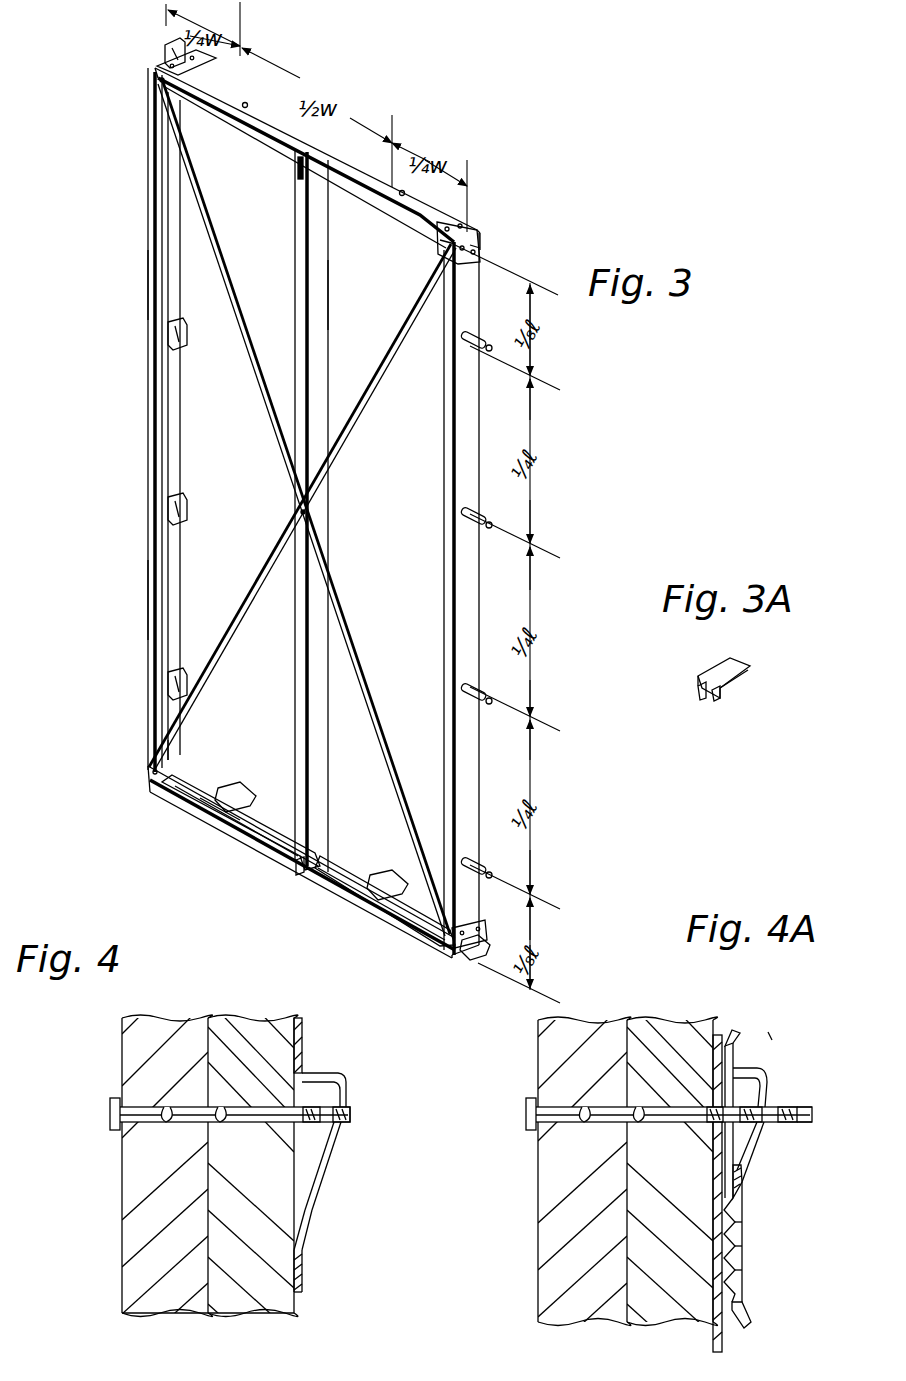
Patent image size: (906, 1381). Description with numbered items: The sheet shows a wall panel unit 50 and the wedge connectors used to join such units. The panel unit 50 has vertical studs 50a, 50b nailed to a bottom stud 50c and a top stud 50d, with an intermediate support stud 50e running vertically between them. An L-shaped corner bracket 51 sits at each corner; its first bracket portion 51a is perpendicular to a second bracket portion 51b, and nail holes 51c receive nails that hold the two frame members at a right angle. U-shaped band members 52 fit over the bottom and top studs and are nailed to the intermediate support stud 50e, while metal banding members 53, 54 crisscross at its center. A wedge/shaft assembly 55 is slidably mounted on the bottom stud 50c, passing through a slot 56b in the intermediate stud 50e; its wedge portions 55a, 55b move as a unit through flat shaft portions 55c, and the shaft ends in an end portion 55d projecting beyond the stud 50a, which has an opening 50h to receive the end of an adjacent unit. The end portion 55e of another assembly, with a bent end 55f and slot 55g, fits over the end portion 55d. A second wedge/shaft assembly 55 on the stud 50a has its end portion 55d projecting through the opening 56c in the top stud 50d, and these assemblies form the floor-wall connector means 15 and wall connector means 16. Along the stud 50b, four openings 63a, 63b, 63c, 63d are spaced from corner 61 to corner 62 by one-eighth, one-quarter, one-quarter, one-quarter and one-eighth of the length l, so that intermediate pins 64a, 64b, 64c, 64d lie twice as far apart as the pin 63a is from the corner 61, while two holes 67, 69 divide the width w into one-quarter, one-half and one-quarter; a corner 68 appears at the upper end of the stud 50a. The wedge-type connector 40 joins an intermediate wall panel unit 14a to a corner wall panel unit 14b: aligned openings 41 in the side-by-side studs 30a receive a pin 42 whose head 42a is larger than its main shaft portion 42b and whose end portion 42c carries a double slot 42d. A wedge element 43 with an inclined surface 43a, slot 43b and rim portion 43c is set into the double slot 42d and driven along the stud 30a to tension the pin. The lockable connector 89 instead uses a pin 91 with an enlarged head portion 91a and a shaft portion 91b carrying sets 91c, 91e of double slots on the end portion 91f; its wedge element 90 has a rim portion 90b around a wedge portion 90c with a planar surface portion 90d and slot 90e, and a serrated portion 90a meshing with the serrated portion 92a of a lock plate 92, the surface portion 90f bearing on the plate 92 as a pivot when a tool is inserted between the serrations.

In FIG. 4, the intermediate wall panel unit 14a is at (120, 1283).
In FIG. 4, the corner wall panel unit 14b is at (296, 1306).
In FIG. 3, the floor-wall connector means 15 is at (222, 826).
In FIG. 3, the wall connector means 16 is at (145, 284).
In FIG. 4, the stud member 30a is at (165, 1318).
In FIG. 4A, the stud member 30a is at (588, 1322).
In FIG. 4, the wedge-type connector 40 is at (305, 1035).
In FIG. 4, the aligned openings 41 is at (167, 1106).
In FIG. 4A, the aligned openings 41 is at (586, 1106).
In FIG. 4, the pin 42 is at (130, 1102).
In FIG. 4, the head 42a is at (110, 1112).
In FIG. 4, the main shaft portion 42b is at (222, 1106).
In FIG. 4, the pin end portion 42c is at (345, 1107).
In FIG. 4, the double slot 42d is at (322, 1107).
In FIG. 4, the wedge element 43 is at (302, 1238).
In FIG. 4, the inclined surface 43a is at (310, 1192).
In FIG. 4, the slot 43b is at (326, 1142).
In FIG. 4, the rim portion 43c is at (303, 1262).
In FIG. 3, the panel unit 50 is at (146, 450).
In FIG. 3, the vertical stud 50a is at (148, 602).
In FIG. 3, the vertical stud 50b is at (446, 550).
In FIG. 3, the bottom stud 50c is at (160, 785).
In FIG. 3, the top stud 50d is at (262, 150).
In FIG. 3, the intermediate support stud 50e is at (326, 290).
In FIG. 3, the opening 50h is at (182, 762).
In FIG. 3, the L-shaped corner bracket 51 is at (478, 230).
In FIG. 3, the first bracket portion 51a is at (447, 240).
In FIG. 3, the second bracket portion 51b is at (483, 250).
In FIG. 3, the nail holes 51c is at (476, 226).
In FIG. 3, the U-shaped band member 52 is at (345, 148).
In FIG. 3, the metal banding member 53 is at (270, 452).
In FIG. 3, the metal banding member 54 is at (378, 368).
In FIG. 3, the wedge/shaft assembly 55 is at (181, 428).
In FIG. 3, the wedge portion 55a is at (238, 788).
In FIG. 3, the wedge portion 55b is at (392, 878).
In FIG. 3, the flat shaft portion 55c is at (326, 856).
In FIG. 3, the end portion 55d is at (470, 958).
In FIG. 3A, the end portion 55e is at (742, 662).
In FIG. 3A, the bent end 55f is at (696, 688).
In FIG. 3A, the slot 55g is at (708, 694).
In FIG. 3, the slot 56b is at (312, 842).
In FIG. 3, the opening 56c is at (474, 922).
In FIG. 3, the corner 61 is at (481, 238).
In FIG. 3, the corner 62 is at (446, 960).
In FIG. 3, the opening 63a is at (463, 334).
In FIG. 3, the opening 63b is at (465, 510).
In FIG. 3, the opening 63c is at (465, 686).
In FIG. 3, the opening 63d is at (488, 865).
In FIG. 3, the intermediate pin 64a is at (488, 350).
In FIG. 3, the intermediate pin 64b is at (486, 524).
In FIG. 3, the pin head 64c is at (486, 700).
In FIG. 3, the pin head 64d is at (490, 877).
In FIG. 3, the opening 67 is at (400, 195).
In FIG. 3, the rivet 68 is at (156, 72).
In FIG. 3, the opening 69 is at (248, 104).
In FIG. 4A, the lockable wedge-type connector 89 is at (775, 1032).
In FIG. 4A, the wedge element 90 is at (742, 1232).
In FIG. 4A, the serrated portion 90a is at (742, 1252).
In FIG. 4A, the rim portion 90b is at (736, 1060).
In FIG. 4A, the wedge portion 90c is at (768, 1082).
In FIG. 4A, the planar surface portion 90d is at (742, 1178).
In FIG. 4A, the slot 90e is at (752, 1148).
In FIG. 4A, the surface portion 90f is at (736, 1034).
In FIG. 4A, the pin 91 is at (540, 1104).
In FIG. 4A, the enlarged head portion 91a is at (526, 1112).
In FIG. 4A, the shaft portion 91b is at (640, 1106).
In FIG. 4A, the set of double slots 91c is at (730, 1062).
In FIG. 4A, the set of double slots 91e is at (798, 1124).
In FIG. 4A, the pin end portion 91f is at (808, 1112).
In FIG. 4A, the lock plate 92 is at (722, 1345).
In FIG. 4A, the serrated portion 92a is at (745, 1290).